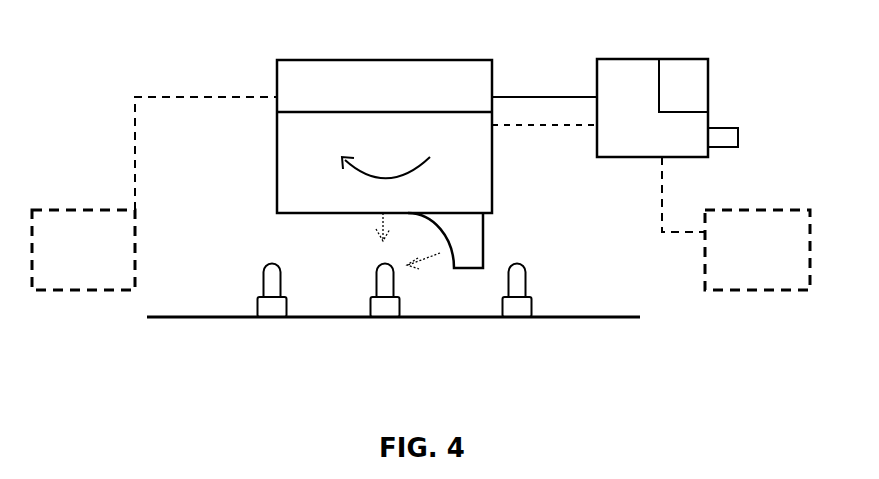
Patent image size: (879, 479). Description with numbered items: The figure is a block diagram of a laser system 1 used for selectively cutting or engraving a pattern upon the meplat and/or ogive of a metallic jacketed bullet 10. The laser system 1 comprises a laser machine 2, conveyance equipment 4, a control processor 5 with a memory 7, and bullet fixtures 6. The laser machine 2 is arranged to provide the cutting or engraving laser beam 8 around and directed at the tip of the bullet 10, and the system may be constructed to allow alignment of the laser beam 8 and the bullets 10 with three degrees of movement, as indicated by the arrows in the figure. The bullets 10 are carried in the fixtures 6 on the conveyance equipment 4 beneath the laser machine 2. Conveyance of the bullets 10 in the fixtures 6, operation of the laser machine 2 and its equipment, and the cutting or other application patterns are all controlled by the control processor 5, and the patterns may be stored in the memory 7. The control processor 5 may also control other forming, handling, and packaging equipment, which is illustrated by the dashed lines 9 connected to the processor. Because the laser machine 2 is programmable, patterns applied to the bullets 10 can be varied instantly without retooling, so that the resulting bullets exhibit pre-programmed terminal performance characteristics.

The laser system 1 is at (266, 69).
The laser machine 2 is at (384, 136).
The conveyance equipment 4 is at (195, 317).
The control processor 5 is at (615, 108).
The bullet fixtures 6 is at (402, 308).
The memory 7 is at (683, 85).
The laser beam 8 is at (366, 237).
The dashed lines 9 is at (421, 193).
The bullet 10 is at (265, 267).